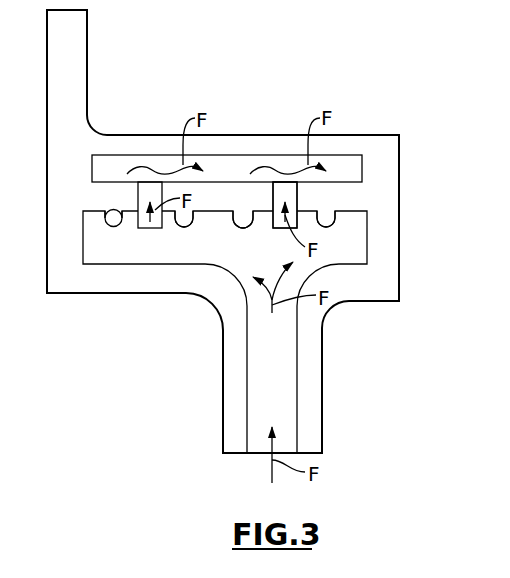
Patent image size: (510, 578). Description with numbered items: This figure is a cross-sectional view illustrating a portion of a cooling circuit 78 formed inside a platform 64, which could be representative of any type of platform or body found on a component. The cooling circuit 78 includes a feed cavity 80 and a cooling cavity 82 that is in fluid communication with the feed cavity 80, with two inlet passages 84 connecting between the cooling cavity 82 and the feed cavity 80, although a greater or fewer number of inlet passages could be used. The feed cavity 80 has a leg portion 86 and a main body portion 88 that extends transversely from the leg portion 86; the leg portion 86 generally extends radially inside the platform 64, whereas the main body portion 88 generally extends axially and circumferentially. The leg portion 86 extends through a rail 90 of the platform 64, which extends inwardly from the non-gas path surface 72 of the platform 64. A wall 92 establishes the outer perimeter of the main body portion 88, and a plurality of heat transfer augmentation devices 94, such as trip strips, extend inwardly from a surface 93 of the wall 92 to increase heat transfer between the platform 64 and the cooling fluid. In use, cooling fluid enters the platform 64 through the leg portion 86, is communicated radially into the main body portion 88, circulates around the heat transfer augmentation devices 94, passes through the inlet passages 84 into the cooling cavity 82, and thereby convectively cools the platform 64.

The platform 64 is at (399, 178).
The non-gas path surface 72 is at (97, 294).
The cooling circuit 78 is at (250, 76).
The feed cavity 80 is at (294, 377).
The cooling cavity 82 is at (235, 158).
The inlet passage 84 is at (137, 205).
The leg portion 86 is at (286, 351).
The main body portion 88 is at (240, 260).
The rail 90 is at (233, 373).
The wall 92 is at (207, 222).
The surface 93 is at (99, 212).
The heat transfer augmentation device 94 is at (177, 227).